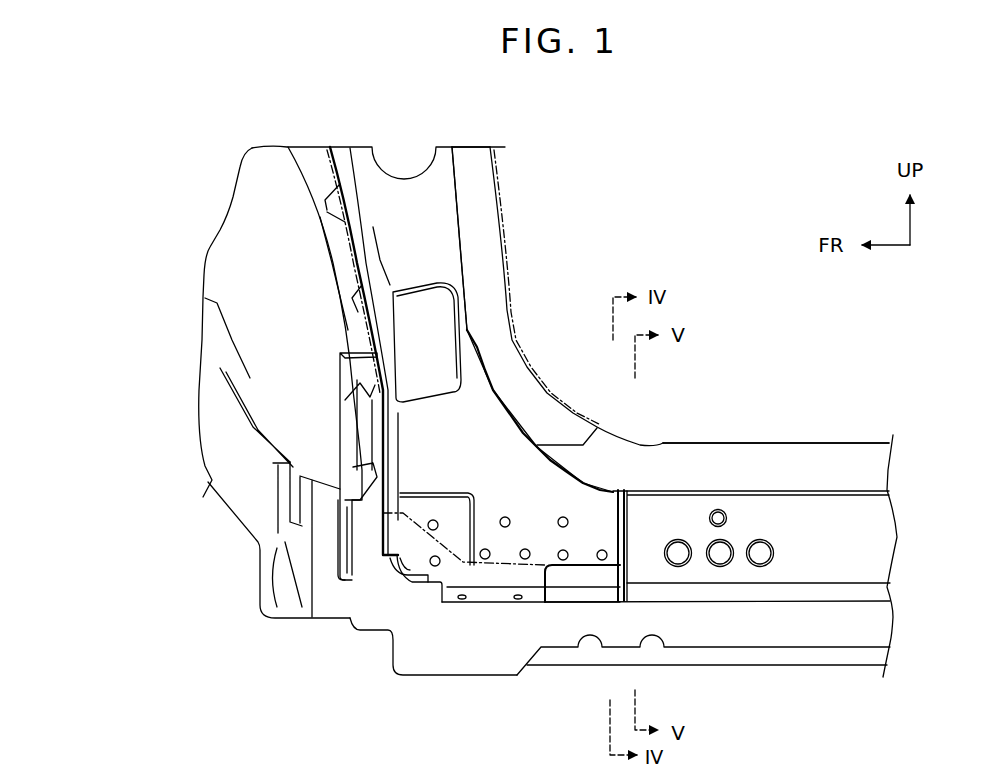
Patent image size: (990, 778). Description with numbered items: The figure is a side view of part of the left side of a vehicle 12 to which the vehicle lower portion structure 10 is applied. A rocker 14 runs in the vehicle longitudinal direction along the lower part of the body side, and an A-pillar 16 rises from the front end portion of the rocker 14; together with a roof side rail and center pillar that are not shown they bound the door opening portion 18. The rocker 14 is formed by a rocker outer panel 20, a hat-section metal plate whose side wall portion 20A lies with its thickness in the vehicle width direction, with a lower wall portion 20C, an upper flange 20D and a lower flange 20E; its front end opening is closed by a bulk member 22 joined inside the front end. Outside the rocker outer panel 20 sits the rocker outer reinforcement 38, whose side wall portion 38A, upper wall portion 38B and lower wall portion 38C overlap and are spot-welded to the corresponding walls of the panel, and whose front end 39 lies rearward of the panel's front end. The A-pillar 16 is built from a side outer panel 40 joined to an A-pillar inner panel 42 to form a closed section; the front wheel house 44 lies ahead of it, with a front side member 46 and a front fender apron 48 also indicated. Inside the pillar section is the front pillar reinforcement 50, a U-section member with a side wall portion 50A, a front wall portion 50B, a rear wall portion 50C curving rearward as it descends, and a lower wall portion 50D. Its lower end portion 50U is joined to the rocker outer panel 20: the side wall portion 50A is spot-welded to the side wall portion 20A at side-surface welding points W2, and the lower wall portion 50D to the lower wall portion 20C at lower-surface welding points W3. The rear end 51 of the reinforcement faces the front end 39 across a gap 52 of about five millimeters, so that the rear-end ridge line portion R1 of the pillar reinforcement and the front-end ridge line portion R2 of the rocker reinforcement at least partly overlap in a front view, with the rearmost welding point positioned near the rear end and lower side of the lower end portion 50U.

The vehicle lower portion structure 10 is at (741, 302).
The vehicle 12 is at (863, 416).
The rocker 14 is at (798, 433).
The A-pillar 16 is at (509, 243).
The door opening portion 18 is at (668, 201).
The rocker outer panel 20 is at (717, 440).
The side wall portion 20A is at (558, 578).
The lower wall portion 20C is at (587, 590).
The flange 20D is at (752, 467).
The flange 20E is at (837, 627).
The bulk member 22 is at (390, 582).
The rocker outer reinforcement 38 is at (744, 605).
The side wall portion 38A is at (873, 532).
The upper wall portion 38B is at (828, 490).
The lower wall portion 38C is at (787, 590).
The front end 39 is at (620, 503).
The side outer panel 40 is at (500, 222).
The A-pillar inner panel 42 is at (477, 179).
The front wheel house 44 is at (333, 267).
The front side member 46 is at (237, 490).
The front fender apron 48 is at (230, 265).
The front pillar reinforcement 50 is at (479, 346).
The side wall portion 50A is at (463, 411).
The front wall portion 50B is at (393, 430).
The rear wall portion 50C is at (467, 307).
The lower wall portion 50D is at (488, 593).
The lower end portion 50U is at (380, 537).
The rear end 51 is at (620, 527).
The gap 52 is at (633, 560).
The rear-end ridge line portion R1 is at (605, 483).
The front-end ridge line portion R2 is at (650, 488).
The side-surface welding points W2 is at (437, 555).
The lower-surface welding points W3 is at (462, 600).